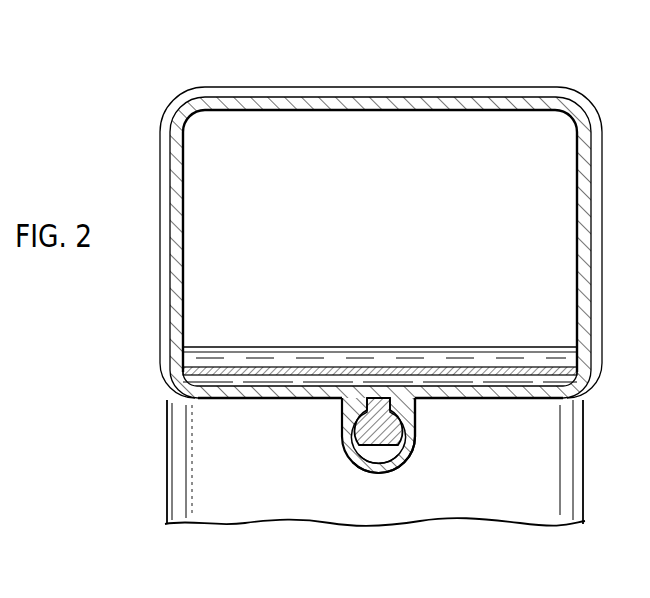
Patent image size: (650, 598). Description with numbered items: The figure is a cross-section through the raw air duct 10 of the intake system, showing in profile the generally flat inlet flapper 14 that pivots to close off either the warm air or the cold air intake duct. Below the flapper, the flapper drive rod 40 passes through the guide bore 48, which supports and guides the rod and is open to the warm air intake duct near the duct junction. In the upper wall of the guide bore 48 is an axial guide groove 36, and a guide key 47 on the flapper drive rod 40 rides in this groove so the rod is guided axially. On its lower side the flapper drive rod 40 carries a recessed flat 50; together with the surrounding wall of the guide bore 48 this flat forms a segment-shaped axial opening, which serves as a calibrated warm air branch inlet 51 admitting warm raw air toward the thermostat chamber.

The raw air duct 10 is at (410, 86).
The inlet flapper 14 is at (264, 373).
The axial guide groove 36 is at (373, 400).
The flapper drive rod 40 is at (360, 430).
The guide key 47 is at (416, 410).
The guide bore 48 is at (414, 448).
The recessed flat 50 is at (395, 473).
The calibrated warm air branch inlet 51 is at (373, 455).